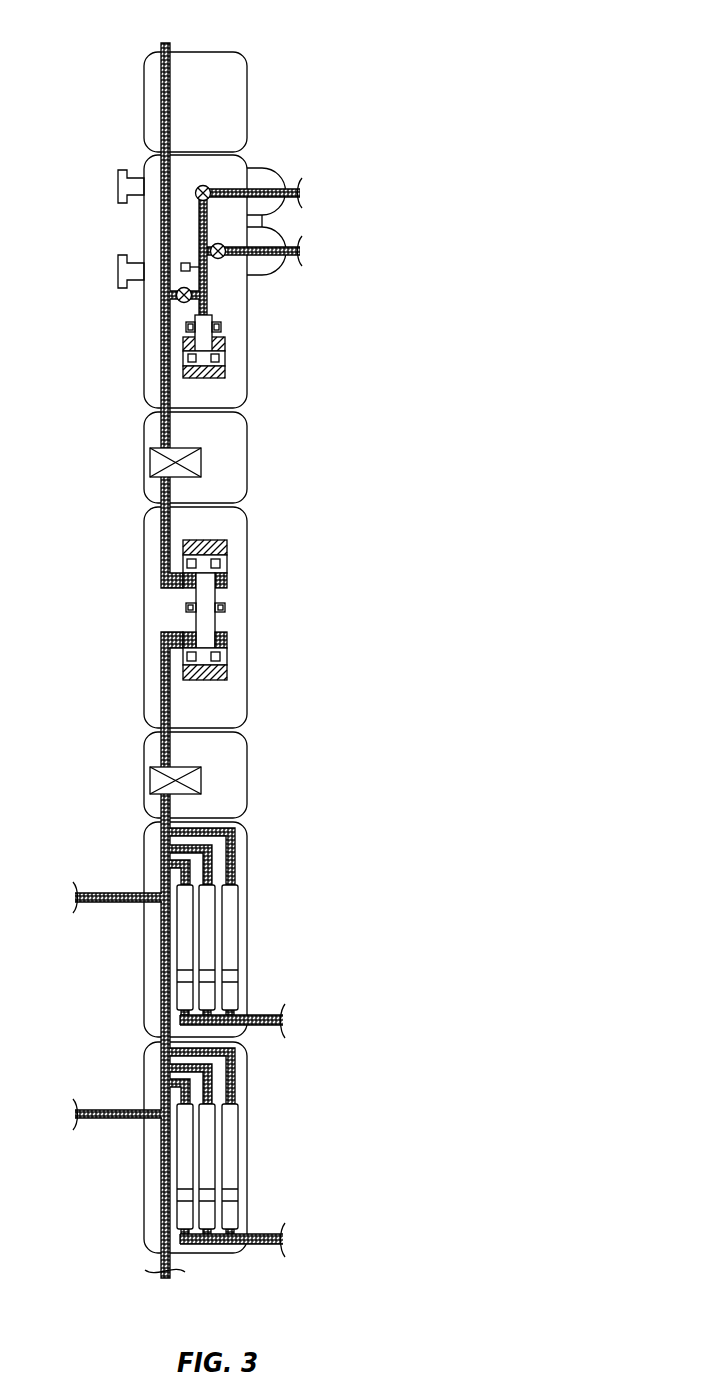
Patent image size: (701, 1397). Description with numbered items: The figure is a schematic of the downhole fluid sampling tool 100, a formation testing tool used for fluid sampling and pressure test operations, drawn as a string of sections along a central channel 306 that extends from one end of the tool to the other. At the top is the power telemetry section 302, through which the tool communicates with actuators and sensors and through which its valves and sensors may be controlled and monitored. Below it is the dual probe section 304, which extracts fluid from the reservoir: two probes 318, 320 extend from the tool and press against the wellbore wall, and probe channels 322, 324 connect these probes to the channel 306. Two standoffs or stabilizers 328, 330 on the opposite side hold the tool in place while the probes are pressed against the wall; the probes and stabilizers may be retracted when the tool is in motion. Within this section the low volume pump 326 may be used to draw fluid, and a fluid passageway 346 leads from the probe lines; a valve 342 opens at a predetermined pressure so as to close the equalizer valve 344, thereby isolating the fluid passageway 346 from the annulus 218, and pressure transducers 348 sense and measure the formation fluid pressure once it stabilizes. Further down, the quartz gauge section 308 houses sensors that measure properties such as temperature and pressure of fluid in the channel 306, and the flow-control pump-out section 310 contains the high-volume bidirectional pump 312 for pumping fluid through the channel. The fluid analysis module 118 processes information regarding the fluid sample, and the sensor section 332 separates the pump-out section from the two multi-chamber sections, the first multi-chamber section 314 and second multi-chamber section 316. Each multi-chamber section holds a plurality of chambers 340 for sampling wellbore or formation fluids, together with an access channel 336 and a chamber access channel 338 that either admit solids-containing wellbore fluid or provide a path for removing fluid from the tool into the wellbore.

The downhole fluid sampling tool 100 is at (246, 639).
The fluid analysis module 118 is at (150, 773).
The annulus 218 is at (412, 1031).
The power telemetry section 302 is at (143, 100).
The dual probe section 304 is at (143, 345).
The channel 306 is at (155, 388).
The quartz gauge section 308 is at (150, 458).
The flow-control pump-out section 310 is at (143, 690).
The high-volume bidirectional pump 312 is at (186, 606).
The first multi-chamber section 314 is at (143, 848).
The second multi-chamber section 316 is at (143, 1065).
The probe 318 is at (277, 177).
The probe 320 is at (277, 235).
The probe channel 322 is at (239, 187).
The probe channel 324 is at (222, 256).
The low volume pump 326 is at (225, 355).
The stabilizer 328 is at (118, 185).
The stabilizer 330 is at (118, 270).
The sensor section 332 is at (201, 780).
The access channel 336 is at (118, 893).
The chamber access channel 338 is at (255, 1015).
The chamber 340 is at (195, 917).
The valve 342 is at (203, 185).
The equalizer valve 344 is at (184, 302).
The fluid passageway 346 is at (199, 233).
The pressure transducer 348 is at (185, 262).